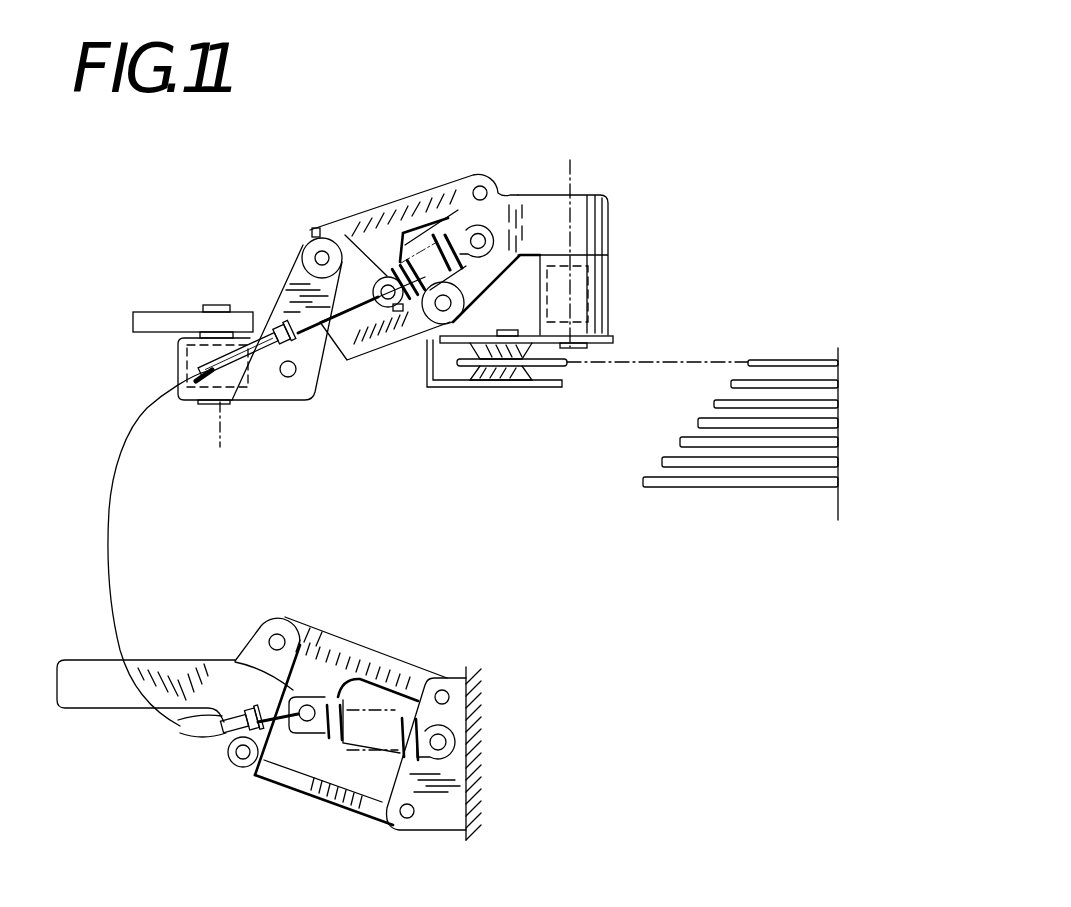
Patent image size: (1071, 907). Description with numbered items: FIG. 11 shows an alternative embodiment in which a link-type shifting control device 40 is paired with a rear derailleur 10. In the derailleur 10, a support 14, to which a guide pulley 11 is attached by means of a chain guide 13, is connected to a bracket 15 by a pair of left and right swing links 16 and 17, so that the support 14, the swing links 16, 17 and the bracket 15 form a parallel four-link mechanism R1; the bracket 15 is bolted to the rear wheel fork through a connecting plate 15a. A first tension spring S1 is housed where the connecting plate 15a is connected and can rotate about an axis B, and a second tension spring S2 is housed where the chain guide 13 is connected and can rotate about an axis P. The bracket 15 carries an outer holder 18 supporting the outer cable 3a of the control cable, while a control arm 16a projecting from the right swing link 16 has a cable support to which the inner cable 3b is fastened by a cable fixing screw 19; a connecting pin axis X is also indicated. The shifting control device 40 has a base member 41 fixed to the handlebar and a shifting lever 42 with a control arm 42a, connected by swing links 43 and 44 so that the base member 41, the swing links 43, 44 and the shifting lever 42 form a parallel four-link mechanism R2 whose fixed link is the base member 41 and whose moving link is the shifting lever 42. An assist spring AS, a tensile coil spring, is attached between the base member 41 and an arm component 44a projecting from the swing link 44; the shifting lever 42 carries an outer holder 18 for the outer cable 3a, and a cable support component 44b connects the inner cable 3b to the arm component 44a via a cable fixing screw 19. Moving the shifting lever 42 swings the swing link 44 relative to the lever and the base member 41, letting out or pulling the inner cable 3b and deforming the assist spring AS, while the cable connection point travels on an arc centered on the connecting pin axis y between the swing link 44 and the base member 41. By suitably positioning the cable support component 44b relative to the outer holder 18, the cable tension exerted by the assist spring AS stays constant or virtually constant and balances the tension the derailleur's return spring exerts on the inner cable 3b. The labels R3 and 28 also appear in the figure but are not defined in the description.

The parallel four-link mechanism R1 is at (426, 182).
The right swing link 16 is at (396, 206).
The connecting pin axis X is at (322, 252).
The cable fixing screw 19 is at (385, 288).
The control arm 16a is at (301, 250).
The outer holder 18 is at (281, 318).
The connecting plate 15a is at (162, 312).
The first tension spring S1 is at (200, 366).
The outer cable 3a is at (226, 392).
The bracket 15 is at (302, 396).
The axis B is at (220, 442).
The inner cable 3b is at (346, 358).
The left swing link 17 is at (366, 358).
The third rotation direction R3 is at (382, 334).
The guide pulley 11 is at (490, 370).
The rear derailleur 10 is at (515, 396).
The chain guide 13 is at (548, 388).
The second tension spring S2 is at (604, 300).
The support 14 is at (600, 197).
The axis P is at (573, 232).
The shifting lever 42 is at (263, 624).
The parallel four-link mechanism R2 is at (334, 623).
The swing link 44 is at (372, 648).
The arm component 44a is at (243, 660).
The cable end fitting 28 is at (232, 718).
The assist spring AS is at (404, 712).
The connecting pin axis y is at (447, 690).
The control arm 42a is at (122, 690).
The shifting control device 40 is at (210, 818).
The cable support component 44b is at (293, 734).
The swing link 43 is at (346, 810).
The base member 41 is at (428, 812).